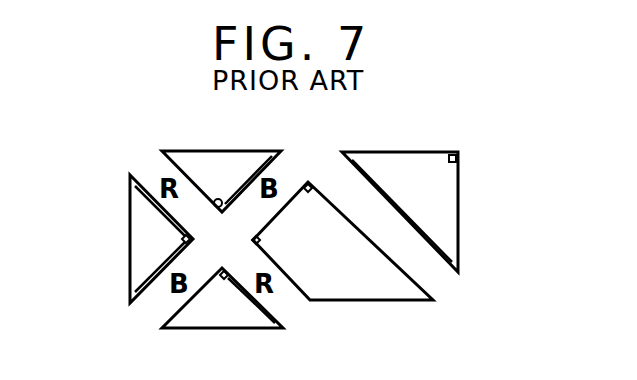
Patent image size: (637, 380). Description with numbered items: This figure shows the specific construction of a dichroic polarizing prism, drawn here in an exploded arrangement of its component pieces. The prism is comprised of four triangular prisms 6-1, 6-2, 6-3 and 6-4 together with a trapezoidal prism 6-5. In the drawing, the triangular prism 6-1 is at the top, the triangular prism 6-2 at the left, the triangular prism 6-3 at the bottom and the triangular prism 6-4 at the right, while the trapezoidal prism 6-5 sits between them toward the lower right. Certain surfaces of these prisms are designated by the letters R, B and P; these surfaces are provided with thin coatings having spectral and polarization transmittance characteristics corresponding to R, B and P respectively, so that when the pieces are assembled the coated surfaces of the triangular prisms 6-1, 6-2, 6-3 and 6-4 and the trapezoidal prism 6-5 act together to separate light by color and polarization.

The triangular prism 6-1 is at (219, 151).
The triangular prism 6-2 is at (131, 238).
The triangular prism 6-3 is at (220, 326).
The triangular prism 6-4 is at (446, 214).
The trapezoidal prism 6-5 is at (359, 298).